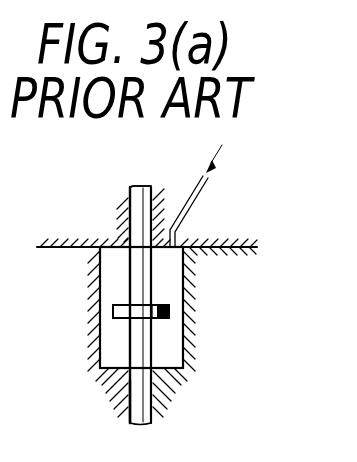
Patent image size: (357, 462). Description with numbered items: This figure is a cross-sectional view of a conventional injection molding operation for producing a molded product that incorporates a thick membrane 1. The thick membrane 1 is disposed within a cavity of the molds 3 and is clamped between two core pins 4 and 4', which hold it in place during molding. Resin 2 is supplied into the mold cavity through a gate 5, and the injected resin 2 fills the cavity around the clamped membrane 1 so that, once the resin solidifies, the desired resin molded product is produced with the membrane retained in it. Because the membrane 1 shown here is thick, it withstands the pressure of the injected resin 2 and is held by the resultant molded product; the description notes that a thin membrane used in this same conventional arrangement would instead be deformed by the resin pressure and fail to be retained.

The thick membrane 1 is at (169, 314).
The resin 2 is at (217, 153).
The molds 3 is at (222, 288).
The core pin 4 is at (109, 305).
The core pin 4' is at (91, 401).
The gate 5 is at (151, 168).